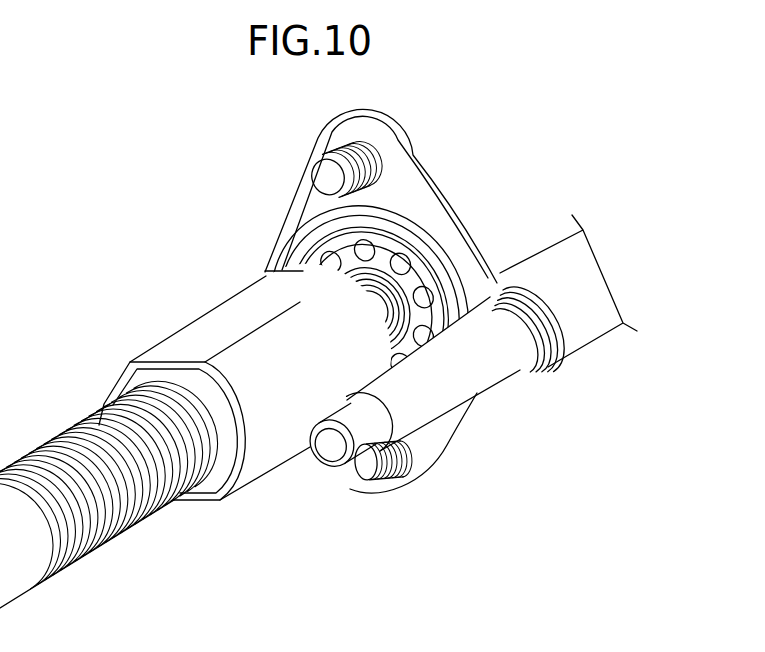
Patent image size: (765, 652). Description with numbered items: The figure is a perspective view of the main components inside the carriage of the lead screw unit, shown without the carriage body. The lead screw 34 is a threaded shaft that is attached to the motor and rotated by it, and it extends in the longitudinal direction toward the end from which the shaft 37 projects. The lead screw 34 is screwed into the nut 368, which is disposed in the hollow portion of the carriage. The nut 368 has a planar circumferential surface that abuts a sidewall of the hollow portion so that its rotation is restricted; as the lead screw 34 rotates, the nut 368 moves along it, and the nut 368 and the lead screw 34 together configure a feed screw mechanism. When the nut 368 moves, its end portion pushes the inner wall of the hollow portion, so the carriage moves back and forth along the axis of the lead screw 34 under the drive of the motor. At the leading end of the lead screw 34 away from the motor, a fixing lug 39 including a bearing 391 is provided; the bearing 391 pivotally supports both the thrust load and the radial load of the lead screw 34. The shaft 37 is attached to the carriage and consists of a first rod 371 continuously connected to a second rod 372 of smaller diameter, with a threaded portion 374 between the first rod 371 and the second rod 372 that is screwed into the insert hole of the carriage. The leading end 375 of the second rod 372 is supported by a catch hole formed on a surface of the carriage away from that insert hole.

The lead screw 34 is at (110, 537).
The nut 368 is at (180, 342).
The fixing lug 39 is at (400, 173).
The bearing 391 is at (353, 262).
The first rod 371 is at (557, 262).
The shaft 37 is at (495, 356).
The threaded portion 374 is at (537, 374).
The leading end 375 is at (319, 462).
The second rod 372 is at (445, 392).